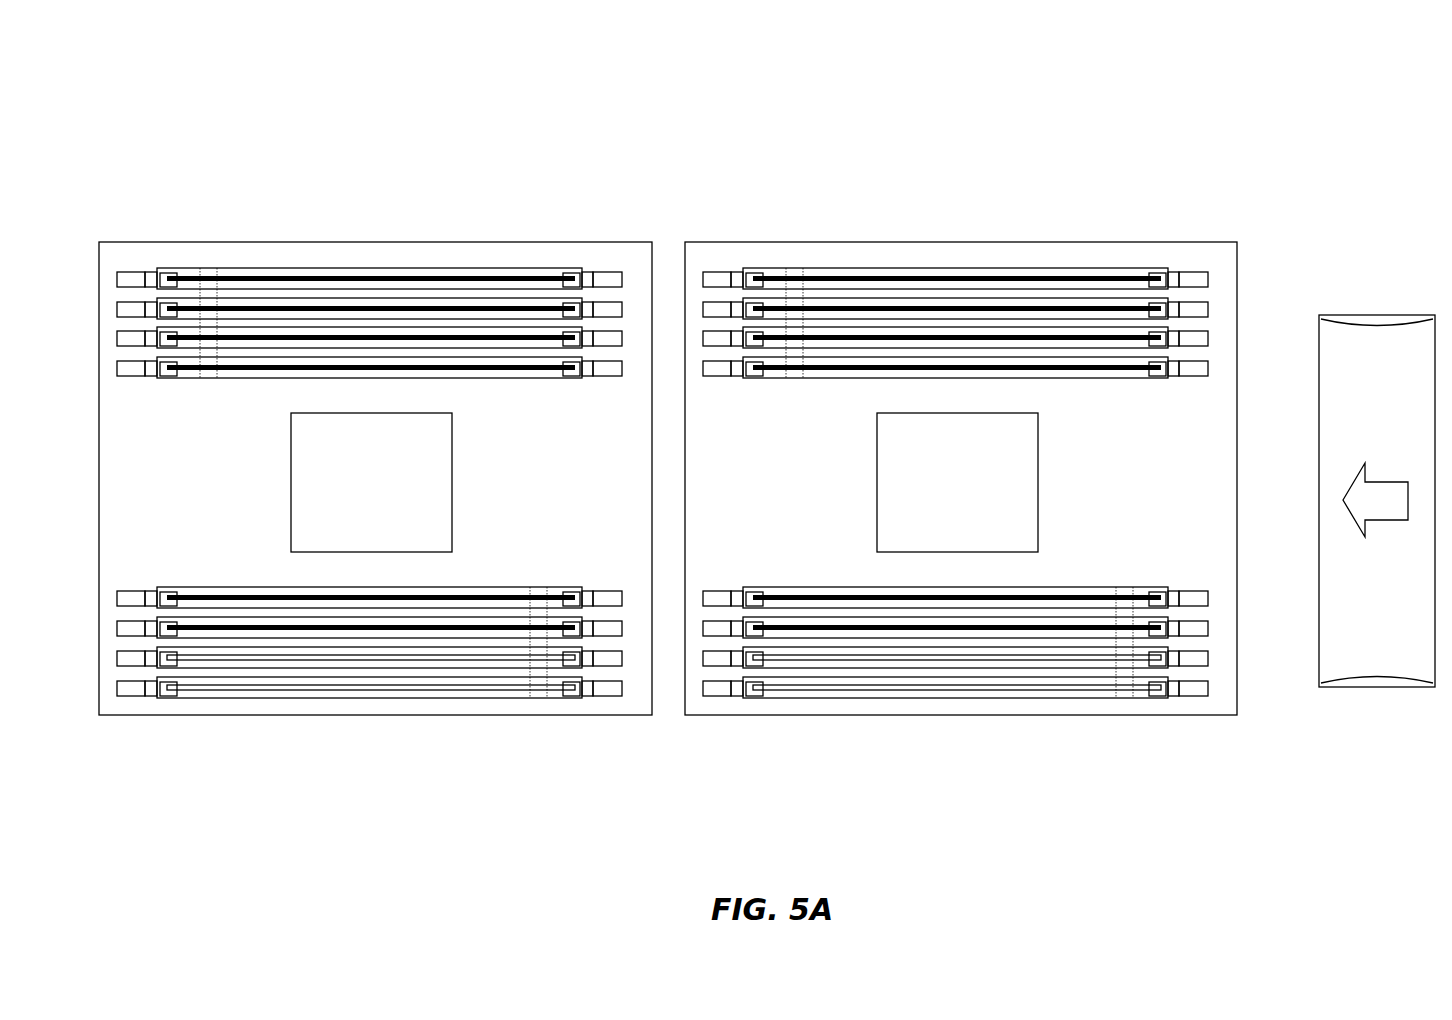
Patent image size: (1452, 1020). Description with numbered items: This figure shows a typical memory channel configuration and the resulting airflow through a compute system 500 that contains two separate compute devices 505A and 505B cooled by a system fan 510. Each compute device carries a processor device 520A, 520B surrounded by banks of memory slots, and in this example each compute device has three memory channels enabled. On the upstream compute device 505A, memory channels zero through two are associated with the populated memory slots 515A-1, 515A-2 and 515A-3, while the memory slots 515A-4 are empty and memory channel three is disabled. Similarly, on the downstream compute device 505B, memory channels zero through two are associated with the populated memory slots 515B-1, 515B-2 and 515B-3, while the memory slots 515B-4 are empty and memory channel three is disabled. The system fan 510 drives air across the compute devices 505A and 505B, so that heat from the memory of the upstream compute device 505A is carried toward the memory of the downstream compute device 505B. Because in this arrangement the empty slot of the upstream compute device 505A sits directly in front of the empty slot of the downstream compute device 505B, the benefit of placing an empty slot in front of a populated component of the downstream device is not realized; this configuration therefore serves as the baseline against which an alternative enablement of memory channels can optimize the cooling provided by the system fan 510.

The compute system 500 is at (738, 42).
The compute device 505A is at (1041, 497).
The compute device 505B is at (450, 504).
The system fan 510 is at (1377, 501).
The memory slots 515A-1 is at (1204, 350).
The memory slots 515A-2 is at (1210, 304).
The memory slots 515A-3 is at (709, 617).
The memory slots 515A-4 is at (1210, 665).
The memory slots 515B-1 is at (618, 352).
The memory slots 515B-2 is at (624, 304).
The memory slots 515B-3 is at (123, 617).
The memory slots 515B-4 is at (624, 664).
The processor device 520A is at (957, 482).
The processor device 520B is at (371, 482).